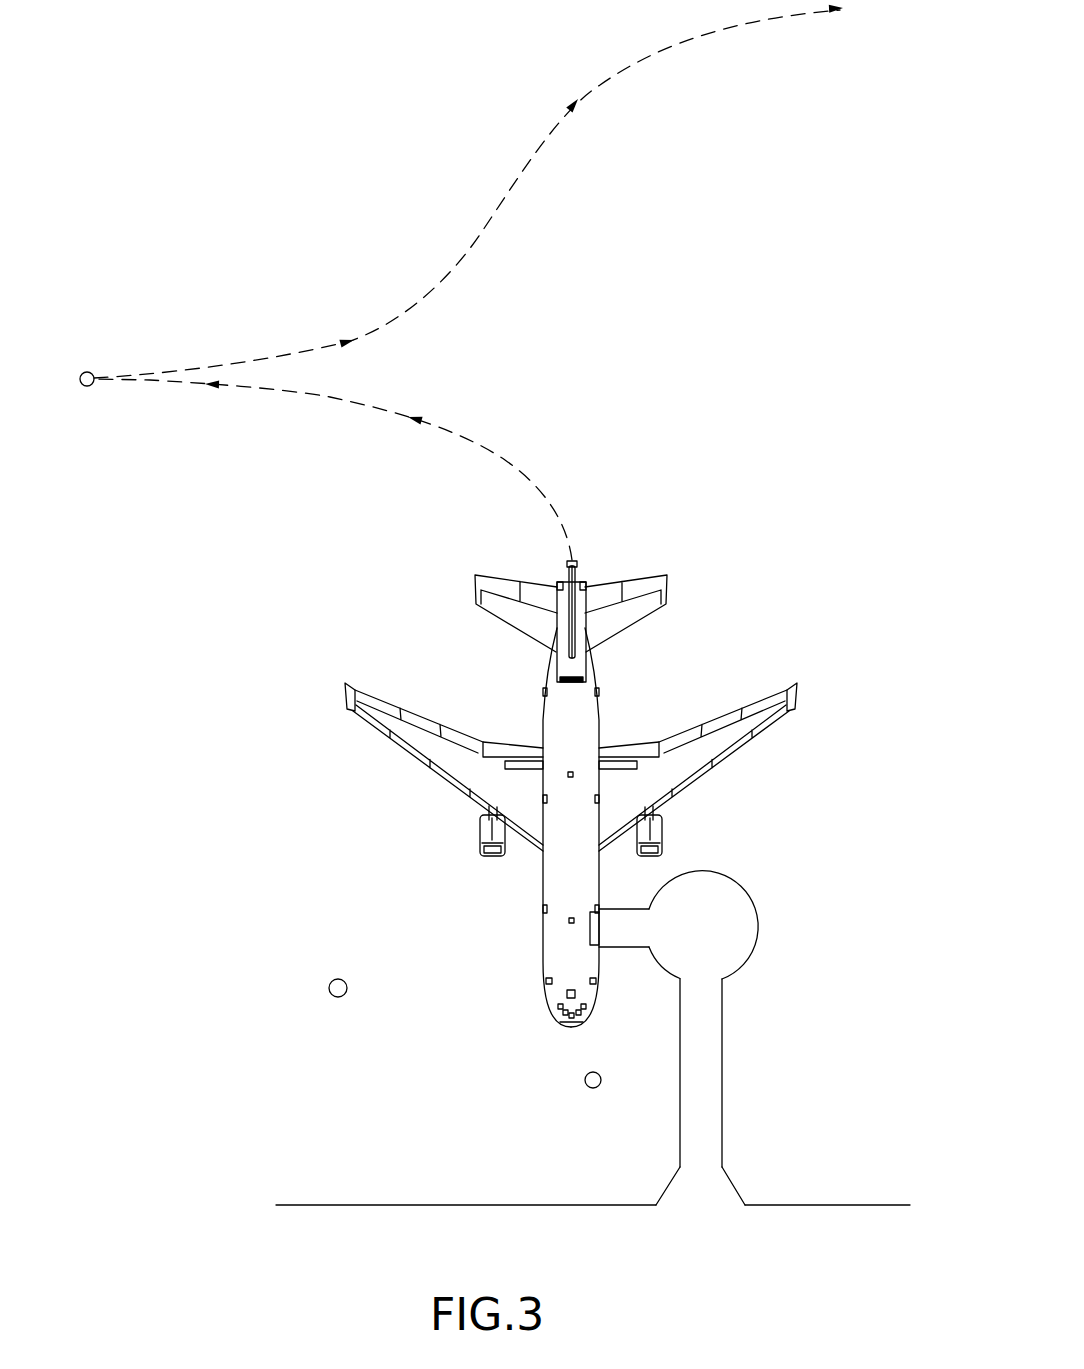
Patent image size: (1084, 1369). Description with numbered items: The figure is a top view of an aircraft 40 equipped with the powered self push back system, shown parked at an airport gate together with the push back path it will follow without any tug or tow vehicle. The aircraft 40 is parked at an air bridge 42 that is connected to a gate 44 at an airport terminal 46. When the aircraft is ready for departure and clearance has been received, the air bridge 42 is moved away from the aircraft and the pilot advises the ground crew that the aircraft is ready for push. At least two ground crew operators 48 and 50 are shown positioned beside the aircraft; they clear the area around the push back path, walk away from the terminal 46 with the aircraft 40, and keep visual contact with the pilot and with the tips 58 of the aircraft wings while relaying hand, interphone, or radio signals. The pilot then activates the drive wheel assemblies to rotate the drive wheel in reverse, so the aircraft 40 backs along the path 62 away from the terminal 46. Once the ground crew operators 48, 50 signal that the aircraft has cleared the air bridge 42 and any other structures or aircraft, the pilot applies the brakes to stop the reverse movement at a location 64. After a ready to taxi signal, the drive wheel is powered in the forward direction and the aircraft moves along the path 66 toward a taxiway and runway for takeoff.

The aircraft 40 is at (585, 723).
The air bridge 42 is at (706, 1082).
The gate 44 is at (700, 1198).
The airport terminal 46 is at (460, 1204).
The ground crew operator 48 is at (585, 1080).
The ground crew operator 50 is at (333, 980).
The wing tips 58 is at (345, 690).
The push back path 62 is at (510, 465).
The stop location 64 is at (92, 370).
The forward taxi path 66 is at (483, 230).